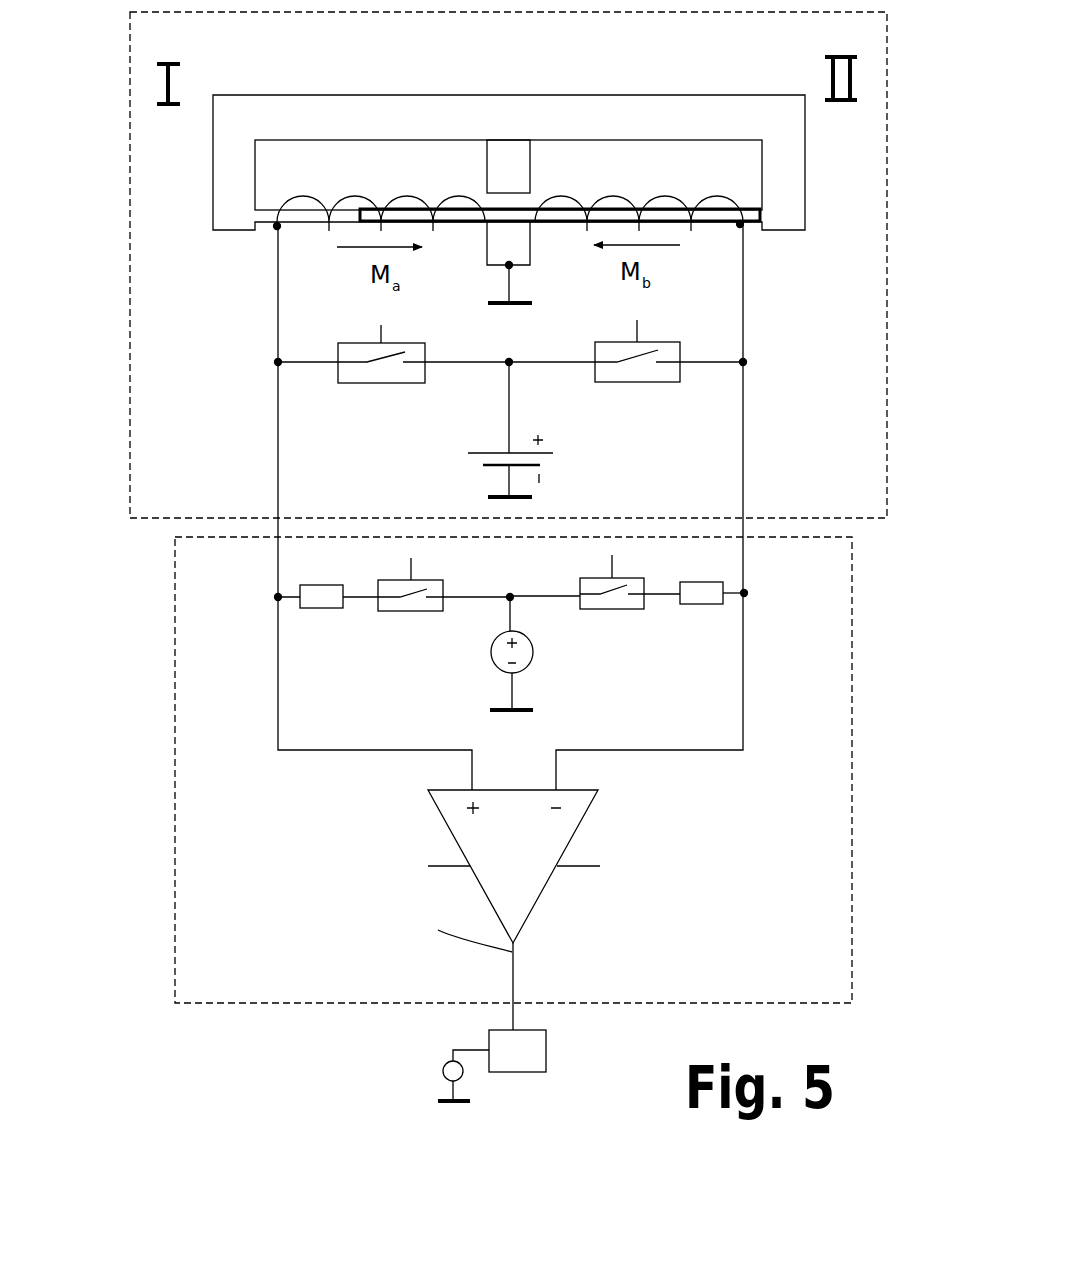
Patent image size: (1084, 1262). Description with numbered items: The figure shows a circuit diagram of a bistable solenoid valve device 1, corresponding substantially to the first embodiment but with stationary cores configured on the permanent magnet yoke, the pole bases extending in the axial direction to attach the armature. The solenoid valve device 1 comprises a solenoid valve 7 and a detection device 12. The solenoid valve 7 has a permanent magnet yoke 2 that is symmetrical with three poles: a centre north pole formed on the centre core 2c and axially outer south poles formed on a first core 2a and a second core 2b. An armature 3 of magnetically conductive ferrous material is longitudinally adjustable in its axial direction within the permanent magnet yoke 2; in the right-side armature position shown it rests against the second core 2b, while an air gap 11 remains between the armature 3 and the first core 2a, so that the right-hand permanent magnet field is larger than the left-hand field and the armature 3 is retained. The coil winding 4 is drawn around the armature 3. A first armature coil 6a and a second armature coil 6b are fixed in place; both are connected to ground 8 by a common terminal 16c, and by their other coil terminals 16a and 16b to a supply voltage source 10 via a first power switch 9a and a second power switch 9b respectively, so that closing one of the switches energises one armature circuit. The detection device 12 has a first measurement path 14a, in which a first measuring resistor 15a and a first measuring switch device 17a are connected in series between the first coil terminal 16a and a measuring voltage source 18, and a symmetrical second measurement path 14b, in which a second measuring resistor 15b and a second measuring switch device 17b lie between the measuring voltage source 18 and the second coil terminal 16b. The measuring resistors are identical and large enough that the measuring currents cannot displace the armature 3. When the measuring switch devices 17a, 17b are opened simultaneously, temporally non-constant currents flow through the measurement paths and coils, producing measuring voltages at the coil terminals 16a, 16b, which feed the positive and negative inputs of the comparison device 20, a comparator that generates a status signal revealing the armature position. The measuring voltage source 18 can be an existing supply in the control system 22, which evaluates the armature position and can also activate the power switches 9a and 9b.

The solenoid valve device 1 is at (220, 1032).
The permanent magnet yoke 2 is at (782, 122).
The first core 2a is at (228, 217).
The second core 2b is at (790, 212).
The centre core 2c is at (504, 163).
The armature 3 is at (580, 210).
The coil winding 4 is at (685, 213).
The first armature coil 6a is at (400, 200).
The second armature coil 6b is at (633, 178).
The solenoid valve 7 is at (872, 128).
The ground 8 is at (530, 303).
The first power switch 9a is at (348, 343).
The second power switch 9b is at (607, 342).
The supply voltage source 10 is at (463, 460).
The air gap 11 is at (346, 210).
The detection device 12 is at (382, 972).
The first measurement path 14a is at (348, 615).
The second measurement path 14b is at (674, 602).
The first measuring resistor 15a is at (320, 585).
The second measuring resistor 15b is at (705, 582).
The first coil terminal 16a is at (275, 226).
The second coil terminal 16b is at (740, 224).
The common terminal 16c is at (487, 222).
The first measuring switch device 17a is at (425, 612).
The second measuring switch device 17b is at (622, 610).
The measuring voltage source 18 is at (488, 655).
The comparison device 20 is at (517, 875).
The control system 22 is at (548, 1051).